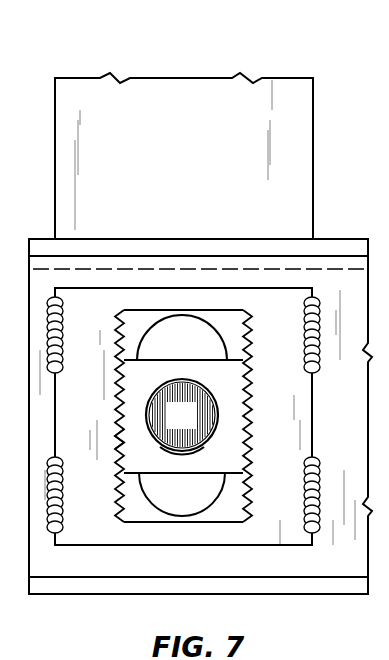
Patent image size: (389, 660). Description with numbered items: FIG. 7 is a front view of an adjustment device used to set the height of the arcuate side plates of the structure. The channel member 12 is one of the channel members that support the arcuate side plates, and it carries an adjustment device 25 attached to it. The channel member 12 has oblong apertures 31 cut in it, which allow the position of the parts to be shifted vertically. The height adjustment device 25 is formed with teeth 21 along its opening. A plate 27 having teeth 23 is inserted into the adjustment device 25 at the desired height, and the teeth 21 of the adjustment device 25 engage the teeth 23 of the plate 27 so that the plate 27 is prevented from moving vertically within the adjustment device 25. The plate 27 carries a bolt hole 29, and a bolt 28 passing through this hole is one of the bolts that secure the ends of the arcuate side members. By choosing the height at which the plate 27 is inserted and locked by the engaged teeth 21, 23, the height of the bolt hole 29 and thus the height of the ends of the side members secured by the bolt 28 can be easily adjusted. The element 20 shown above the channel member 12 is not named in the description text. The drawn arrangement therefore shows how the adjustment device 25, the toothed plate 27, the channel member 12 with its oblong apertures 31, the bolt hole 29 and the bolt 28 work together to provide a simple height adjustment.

The channel member 12 is at (335, 426).
The upper block 20 is at (169, 166).
The teeth 21 is at (118, 332).
The teeth 23 is at (122, 438).
The adjustment device 25 is at (264, 324).
The plate 27 is at (209, 461).
The bolt 28 is at (169, 426).
The bolt hole 29 is at (170, 449).
The oblong aperture 31 is at (169, 354).